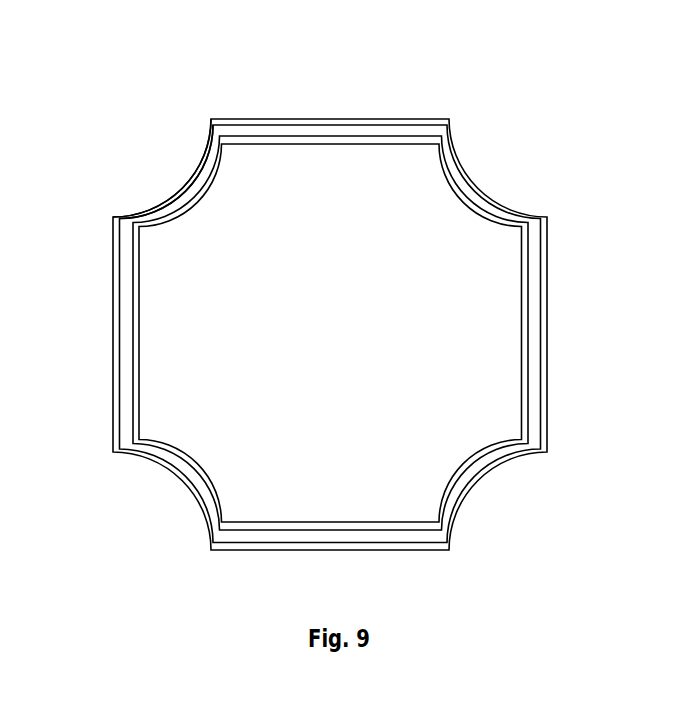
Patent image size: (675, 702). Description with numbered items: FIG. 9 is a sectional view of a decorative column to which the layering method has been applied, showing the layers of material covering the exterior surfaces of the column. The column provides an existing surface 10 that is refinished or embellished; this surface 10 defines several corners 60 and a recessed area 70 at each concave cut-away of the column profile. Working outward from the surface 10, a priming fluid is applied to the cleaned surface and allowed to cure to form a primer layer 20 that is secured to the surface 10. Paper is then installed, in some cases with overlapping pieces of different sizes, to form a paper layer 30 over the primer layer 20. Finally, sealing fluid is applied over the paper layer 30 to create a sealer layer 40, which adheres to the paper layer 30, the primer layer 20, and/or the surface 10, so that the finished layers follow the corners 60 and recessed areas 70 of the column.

The surface 10 is at (197, 484).
The primer layer 20 is at (454, 166).
The paper layer 30 is at (406, 114).
The sealer layer 40 is at (335, 108).
The corner 60 is at (204, 109).
The recessed area 70 is at (161, 163).